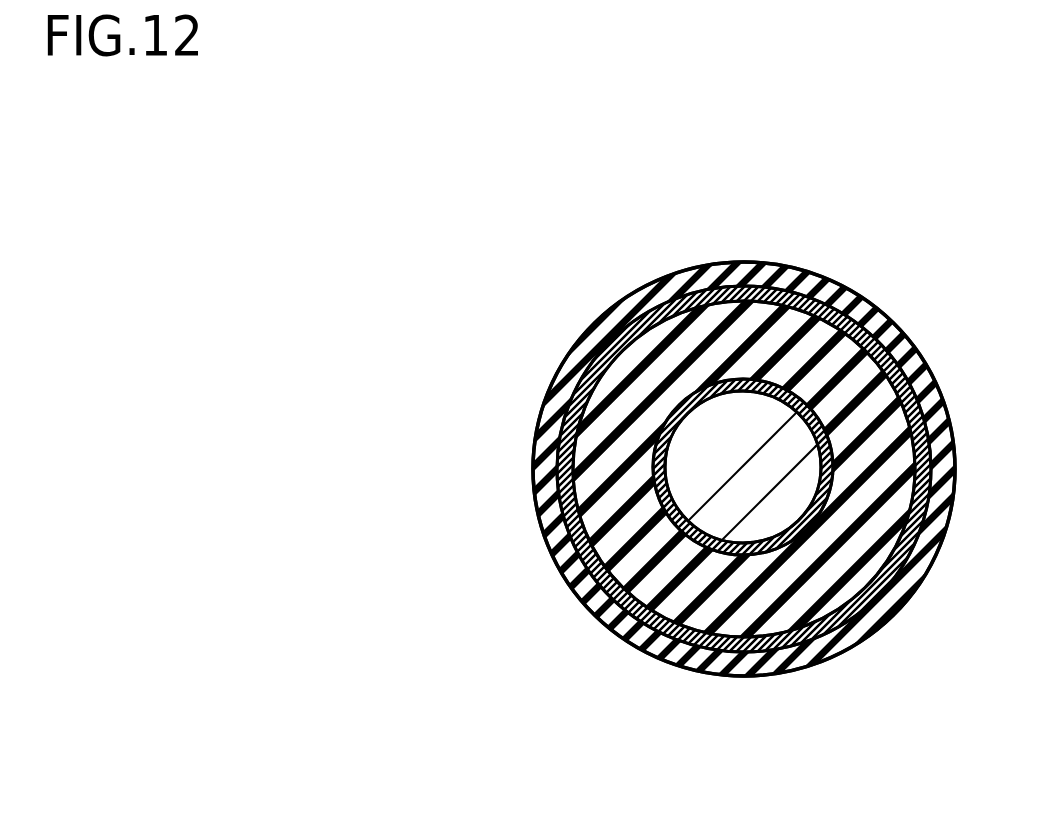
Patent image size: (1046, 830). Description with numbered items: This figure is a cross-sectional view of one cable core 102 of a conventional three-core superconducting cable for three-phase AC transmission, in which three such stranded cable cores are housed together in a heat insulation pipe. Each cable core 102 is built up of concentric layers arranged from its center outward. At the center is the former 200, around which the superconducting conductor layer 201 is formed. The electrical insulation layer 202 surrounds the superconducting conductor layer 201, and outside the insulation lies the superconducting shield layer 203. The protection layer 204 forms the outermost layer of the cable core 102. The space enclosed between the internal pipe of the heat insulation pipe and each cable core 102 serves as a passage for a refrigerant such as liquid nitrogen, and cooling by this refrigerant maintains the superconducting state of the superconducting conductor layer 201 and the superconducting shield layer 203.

The cable core 102 is at (642, 262).
The former 200 is at (723, 452).
The superconducting conductor layer 201 is at (655, 502).
The electrical insulation layer 202 is at (652, 552).
The superconducting shield layer 203 is at (661, 641).
The protection layer 204 is at (780, 667).